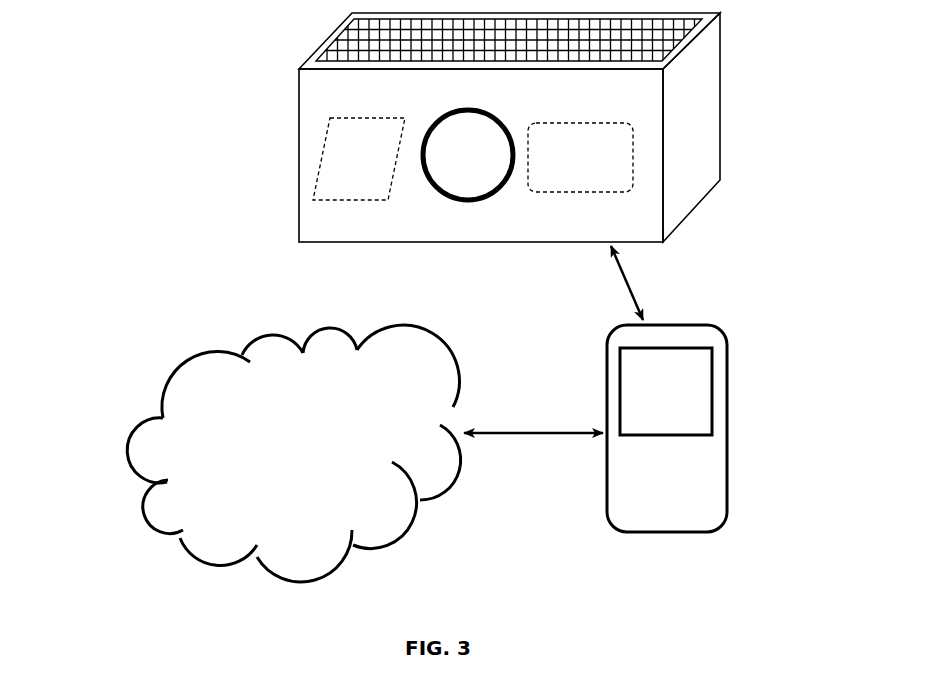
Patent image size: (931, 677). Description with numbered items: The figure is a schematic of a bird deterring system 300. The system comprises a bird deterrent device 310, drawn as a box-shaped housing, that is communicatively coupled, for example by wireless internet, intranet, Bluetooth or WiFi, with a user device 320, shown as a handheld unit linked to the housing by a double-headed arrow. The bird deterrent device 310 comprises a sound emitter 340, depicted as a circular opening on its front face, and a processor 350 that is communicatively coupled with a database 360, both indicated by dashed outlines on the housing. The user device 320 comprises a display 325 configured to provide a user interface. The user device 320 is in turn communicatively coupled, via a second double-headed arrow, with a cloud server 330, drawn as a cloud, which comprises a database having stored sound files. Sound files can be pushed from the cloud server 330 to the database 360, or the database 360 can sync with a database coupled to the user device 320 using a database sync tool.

The bird deterring system 300 is at (138, 141).
The bird deterrent device 310 is at (297, 122).
The user device 320 is at (727, 467).
The display 325 is at (713, 378).
The cloud server 330 is at (293, 453).
The sound emitter 340 is at (466, 201).
The processor 350 is at (557, 192).
The database 360 is at (317, 202).